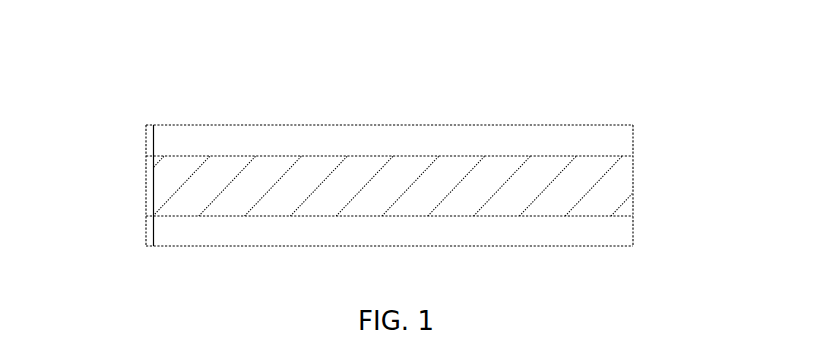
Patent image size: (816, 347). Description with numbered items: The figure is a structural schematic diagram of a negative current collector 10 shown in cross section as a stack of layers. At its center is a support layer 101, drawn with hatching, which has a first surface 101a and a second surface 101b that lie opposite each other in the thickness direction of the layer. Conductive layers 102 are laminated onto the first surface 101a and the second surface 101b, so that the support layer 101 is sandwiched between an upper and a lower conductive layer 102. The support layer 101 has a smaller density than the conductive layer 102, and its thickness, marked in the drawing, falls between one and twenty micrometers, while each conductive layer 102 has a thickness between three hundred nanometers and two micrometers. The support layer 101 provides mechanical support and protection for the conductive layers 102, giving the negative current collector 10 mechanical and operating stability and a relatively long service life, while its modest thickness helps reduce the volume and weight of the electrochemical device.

The negative current collector 10 is at (402, 72).
The support layer 101 is at (167, 189).
The first surface 101a is at (245, 157).
The second surface 101b is at (246, 216).
The conductive layer 102 is at (598, 232).